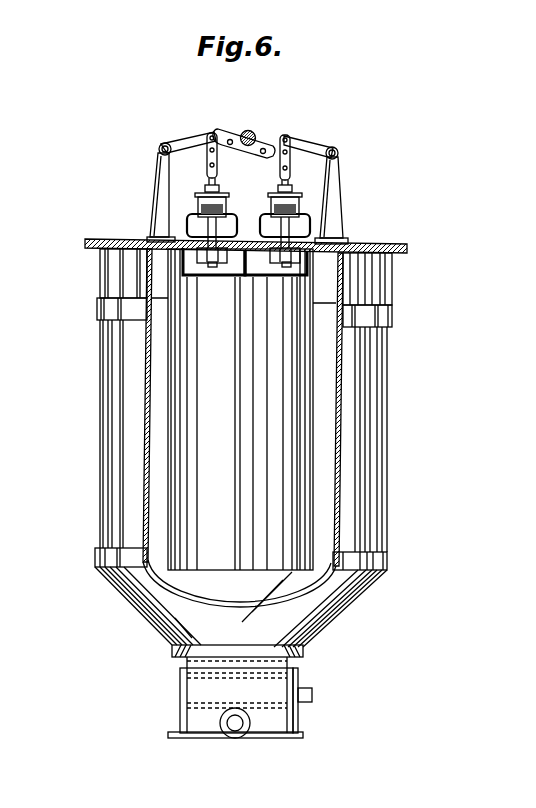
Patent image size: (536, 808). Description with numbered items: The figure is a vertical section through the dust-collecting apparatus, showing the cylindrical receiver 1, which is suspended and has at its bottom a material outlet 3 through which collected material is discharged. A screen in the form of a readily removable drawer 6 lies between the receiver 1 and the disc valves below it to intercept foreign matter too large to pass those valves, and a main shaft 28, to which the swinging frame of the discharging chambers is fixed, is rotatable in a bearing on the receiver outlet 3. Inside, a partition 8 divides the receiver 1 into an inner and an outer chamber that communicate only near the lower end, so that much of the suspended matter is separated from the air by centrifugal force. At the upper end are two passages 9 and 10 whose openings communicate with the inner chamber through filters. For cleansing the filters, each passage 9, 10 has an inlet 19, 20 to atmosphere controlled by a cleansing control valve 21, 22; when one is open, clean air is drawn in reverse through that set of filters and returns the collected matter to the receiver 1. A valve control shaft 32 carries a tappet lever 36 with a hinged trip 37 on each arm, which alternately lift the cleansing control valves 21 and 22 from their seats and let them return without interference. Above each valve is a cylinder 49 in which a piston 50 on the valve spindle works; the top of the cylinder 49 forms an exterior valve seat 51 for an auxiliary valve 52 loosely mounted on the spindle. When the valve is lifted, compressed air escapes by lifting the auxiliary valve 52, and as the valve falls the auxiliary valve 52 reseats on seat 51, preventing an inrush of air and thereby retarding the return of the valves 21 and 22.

The cylindrical receiver 1 is at (146, 470).
The material outlet 3 is at (187, 661).
The removable drawer 6 is at (298, 688).
The partition 8 is at (172, 490).
The passage 9 is at (192, 266).
The passage 10 is at (307, 263).
The inlet 19 is at (193, 263).
The inlet 20 is at (303, 278).
The cleansing control valve 21 is at (198, 232).
The cleansing control valve 22 is at (310, 233).
The main shaft 28 is at (235, 731).
The valve control shaft 32 is at (252, 131).
The tappet lever 36 is at (230, 130).
The hinged trip 37 is at (223, 133).
The cylinder 49 is at (197, 203).
The piston 50 is at (271, 208).
The exterior valve seat 51 is at (216, 190).
The auxiliary valve 52 is at (210, 178).